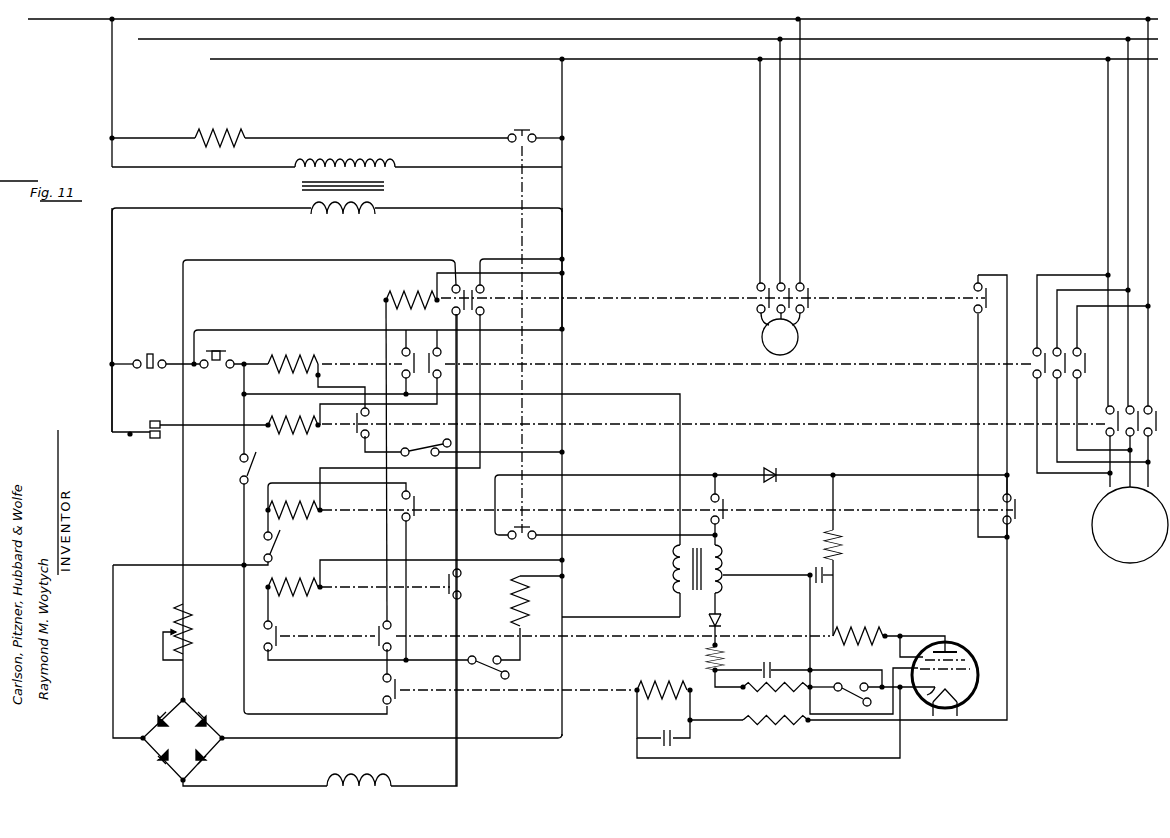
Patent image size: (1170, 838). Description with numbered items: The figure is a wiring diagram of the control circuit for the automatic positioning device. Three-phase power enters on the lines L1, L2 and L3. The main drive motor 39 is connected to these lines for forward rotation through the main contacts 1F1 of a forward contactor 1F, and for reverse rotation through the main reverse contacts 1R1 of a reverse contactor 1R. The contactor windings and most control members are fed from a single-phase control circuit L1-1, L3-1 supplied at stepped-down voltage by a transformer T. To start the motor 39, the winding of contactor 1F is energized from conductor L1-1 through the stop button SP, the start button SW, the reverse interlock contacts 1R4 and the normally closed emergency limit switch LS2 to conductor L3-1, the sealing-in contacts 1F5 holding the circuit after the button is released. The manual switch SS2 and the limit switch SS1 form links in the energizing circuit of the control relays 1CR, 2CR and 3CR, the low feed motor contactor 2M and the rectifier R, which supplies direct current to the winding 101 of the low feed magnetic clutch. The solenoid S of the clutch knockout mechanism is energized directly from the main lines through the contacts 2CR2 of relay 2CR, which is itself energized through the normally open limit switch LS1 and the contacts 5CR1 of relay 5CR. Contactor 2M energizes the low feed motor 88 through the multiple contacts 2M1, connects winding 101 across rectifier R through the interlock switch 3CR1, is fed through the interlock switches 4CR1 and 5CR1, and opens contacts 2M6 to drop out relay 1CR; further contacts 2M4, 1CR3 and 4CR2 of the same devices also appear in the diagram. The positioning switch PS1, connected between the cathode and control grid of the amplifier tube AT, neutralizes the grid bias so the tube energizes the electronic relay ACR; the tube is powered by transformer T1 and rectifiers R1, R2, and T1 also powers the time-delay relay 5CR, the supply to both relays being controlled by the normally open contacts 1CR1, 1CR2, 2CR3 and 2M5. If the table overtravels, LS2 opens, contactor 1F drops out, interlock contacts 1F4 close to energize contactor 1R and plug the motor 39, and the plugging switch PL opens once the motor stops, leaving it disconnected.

The supply line L1 is at (78, 20).
The supply line L2 is at (176, 40).
The supply line L3 is at (248, 60).
The actuating solenoid S is at (222, 131).
The contacts of relay 2CR 2CR2 is at (530, 120).
The transformer T is at (400, 189).
The line conductor L1-1 is at (110, 297).
The line conductor L3-1 is at (566, 243).
The plugging switch PL is at (150, 440).
The stop button SP is at (146, 352).
The manual start button SW is at (222, 368).
The forward contactor 1F is at (288, 356).
The sealing-in contacts 1F5 is at (400, 352).
The interlock contacts 1F4 is at (435, 346).
The reverse contactor 1R is at (286, 434).
The reverse interlock contacts 1R4 is at (358, 438).
The emergency limit switch LS2 is at (424, 447).
The manually operated switch SS2 is at (238, 470).
The low feed motor contactor 2M is at (426, 296).
The contact 2M4 is at (457, 282).
The contacts of contactor 2M 2M6 is at (484, 310).
The control relay 1CR is at (300, 520).
The contact 1CR3 is at (416, 524).
The limit switch SS1 is at (276, 548).
The control relay 3CR is at (290, 596).
The interlock switch 3CR1 is at (452, 600).
The contact 4CR2 is at (280, 640).
The interlock switch 4CR1 is at (376, 628).
The normally open contacts 5CR1 is at (380, 690).
The limit switch LS1 is at (492, 650).
The relay 2CR is at (514, 600).
The normally open contacts 2CR3 is at (512, 540).
The transformer T1 is at (672, 586).
The rectifier R2 is at (724, 622).
The positioning switch PS1 is at (850, 700).
The electronic relay ACR is at (856, 630).
The amplifier tube AT is at (962, 646).
The relay 5CR is at (664, 678).
The rectifier R1 is at (768, 464).
The normally open contacts 1CR2 is at (728, 518).
The normally open contacts 1CR1 is at (1020, 510).
The normally open contacts 2M5 is at (970, 306).
The multiple contacts 2M1 is at (810, 290).
The low feed motor 88 is at (798, 340).
The main contacts 1F1 is at (1086, 350).
The main reverse contacts 1R1 is at (1104, 414).
The main drive motor 39 is at (1124, 565).
The rectifier R is at (152, 760).
The winding of low feed magnetic clutch 101 is at (376, 780).